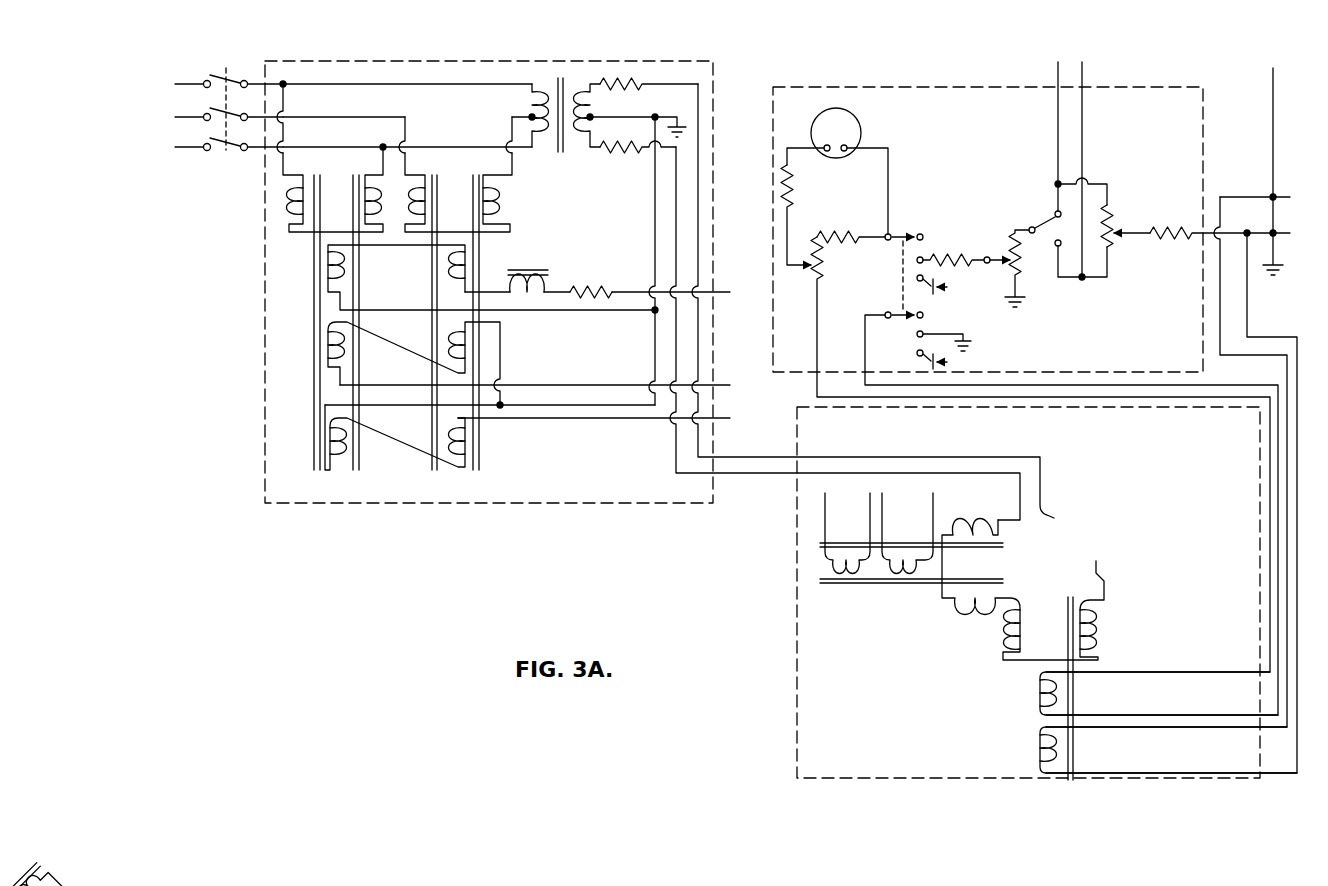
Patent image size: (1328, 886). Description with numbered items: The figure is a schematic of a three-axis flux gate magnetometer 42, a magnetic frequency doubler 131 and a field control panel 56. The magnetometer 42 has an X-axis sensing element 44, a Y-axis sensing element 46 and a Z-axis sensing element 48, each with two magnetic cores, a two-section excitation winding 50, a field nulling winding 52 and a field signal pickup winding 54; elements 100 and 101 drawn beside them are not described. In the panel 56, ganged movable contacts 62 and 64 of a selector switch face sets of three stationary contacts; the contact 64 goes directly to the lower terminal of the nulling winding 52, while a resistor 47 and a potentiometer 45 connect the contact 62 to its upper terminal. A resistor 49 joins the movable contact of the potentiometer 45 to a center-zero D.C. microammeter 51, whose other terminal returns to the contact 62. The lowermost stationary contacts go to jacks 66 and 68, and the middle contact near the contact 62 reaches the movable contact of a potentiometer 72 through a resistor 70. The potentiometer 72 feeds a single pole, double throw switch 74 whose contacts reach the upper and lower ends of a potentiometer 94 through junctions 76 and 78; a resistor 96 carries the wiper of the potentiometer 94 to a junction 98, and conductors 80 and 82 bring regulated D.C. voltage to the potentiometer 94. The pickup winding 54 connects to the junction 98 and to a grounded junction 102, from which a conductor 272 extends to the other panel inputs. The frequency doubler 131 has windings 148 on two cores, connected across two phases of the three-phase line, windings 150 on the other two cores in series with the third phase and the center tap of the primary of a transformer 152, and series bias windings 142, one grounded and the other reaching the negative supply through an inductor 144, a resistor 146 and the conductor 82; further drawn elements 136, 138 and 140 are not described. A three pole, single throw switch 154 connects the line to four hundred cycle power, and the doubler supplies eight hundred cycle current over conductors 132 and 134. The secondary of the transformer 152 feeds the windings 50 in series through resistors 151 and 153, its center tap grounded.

The three-axis flux gate magnetometer 42 is at (795, 639).
The X-axis sensing element 44 is at (1026, 707).
The potentiometer 45 is at (820, 268).
The Y-axis sensing element 46 is at (879, 592).
The resistor 47 is at (835, 230).
The Z-axis sensing element 48 is at (1132, 501).
The resistor 49 is at (793, 186).
The two-section excitation winding 50 is at (980, 556).
The D.C. microammeter 51 is at (856, 120).
The field nulling winding 52 is at (903, 574).
The field signal pickup winding 54 is at (845, 574).
The field control panel 56 is at (893, 86).
The movable contact 62 is at (896, 233).
The movable contact 64 is at (892, 319).
The jack 66 is at (948, 290).
The jack 68 is at (948, 362).
The resistor 70 is at (951, 258).
The potentiometer 72 is at (1018, 275).
The single pole, double throw switch 74 is at (1050, 220).
The junction 76 is at (1056, 183).
The junction 78 is at (1083, 279).
The conductor 80 is at (1057, 72).
The conductor 82 is at (716, 293).
The potentiometer 94 is at (1111, 214).
The resistor 96 is at (1160, 241).
The junction 98 is at (1250, 222).
The conductor 100 is at (1205, 773).
The conductor 101 is at (1103, 728).
The grounded junction 102 is at (1275, 195).
The magnetic frequency doubler 131 is at (530, 506).
The conductor 132 is at (720, 418).
The conductor 134 is at (718, 388).
The winding 136 is at (326, 347).
The winding 138 is at (344, 456).
The conductor 140 is at (500, 406).
The bias windings 142 is at (450, 268).
The inductor 144 is at (542, 259).
The resistor 146 is at (598, 291).
The windings 148 is at (368, 175).
The windings 150 is at (485, 175).
The resistor 151 is at (614, 153).
The transformer 152 is at (560, 77).
The resistor 153 is at (634, 78).
The three pole, single throw switch 154 is at (234, 62).
The conductor 272 is at (1275, 120).